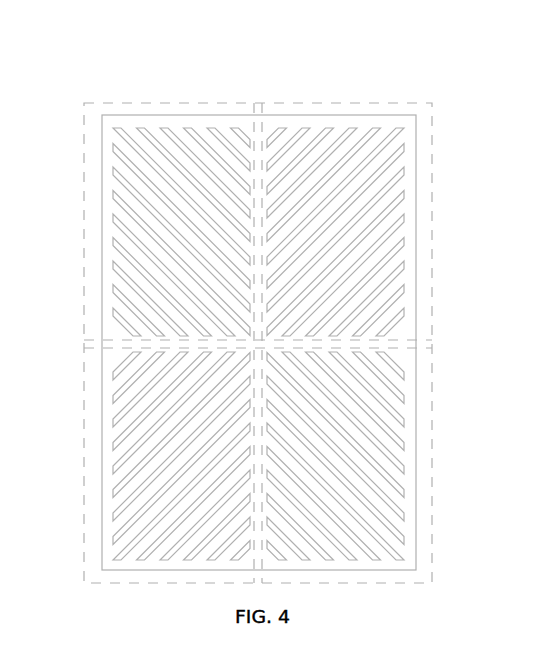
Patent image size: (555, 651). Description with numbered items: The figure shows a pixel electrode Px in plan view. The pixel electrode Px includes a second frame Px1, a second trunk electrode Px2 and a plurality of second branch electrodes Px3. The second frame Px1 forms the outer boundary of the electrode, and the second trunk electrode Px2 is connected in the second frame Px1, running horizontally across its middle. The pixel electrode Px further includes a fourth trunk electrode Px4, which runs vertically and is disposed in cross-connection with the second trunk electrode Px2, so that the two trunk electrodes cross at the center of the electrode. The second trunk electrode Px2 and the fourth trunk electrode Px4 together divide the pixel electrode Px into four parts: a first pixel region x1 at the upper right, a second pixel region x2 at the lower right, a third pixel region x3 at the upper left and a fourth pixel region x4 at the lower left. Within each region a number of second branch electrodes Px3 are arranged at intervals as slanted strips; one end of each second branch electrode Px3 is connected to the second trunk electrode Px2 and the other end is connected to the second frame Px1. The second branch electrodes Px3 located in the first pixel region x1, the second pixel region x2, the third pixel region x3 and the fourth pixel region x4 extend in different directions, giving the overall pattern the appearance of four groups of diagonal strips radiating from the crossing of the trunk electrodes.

The pixel electrode Px is at (424, 69).
The second frame Px1 is at (410, 230).
The second trunk electrode Px2 is at (370, 342).
The second branch electrode Px3 is at (383, 298).
The fourth trunk electrode Px4 is at (258, 143).
The first pixel region x1 is at (434, 125).
The second pixel region x2 is at (433, 470).
The third pixel region x3 is at (83, 172).
The fourth pixel region x4 is at (83, 521).